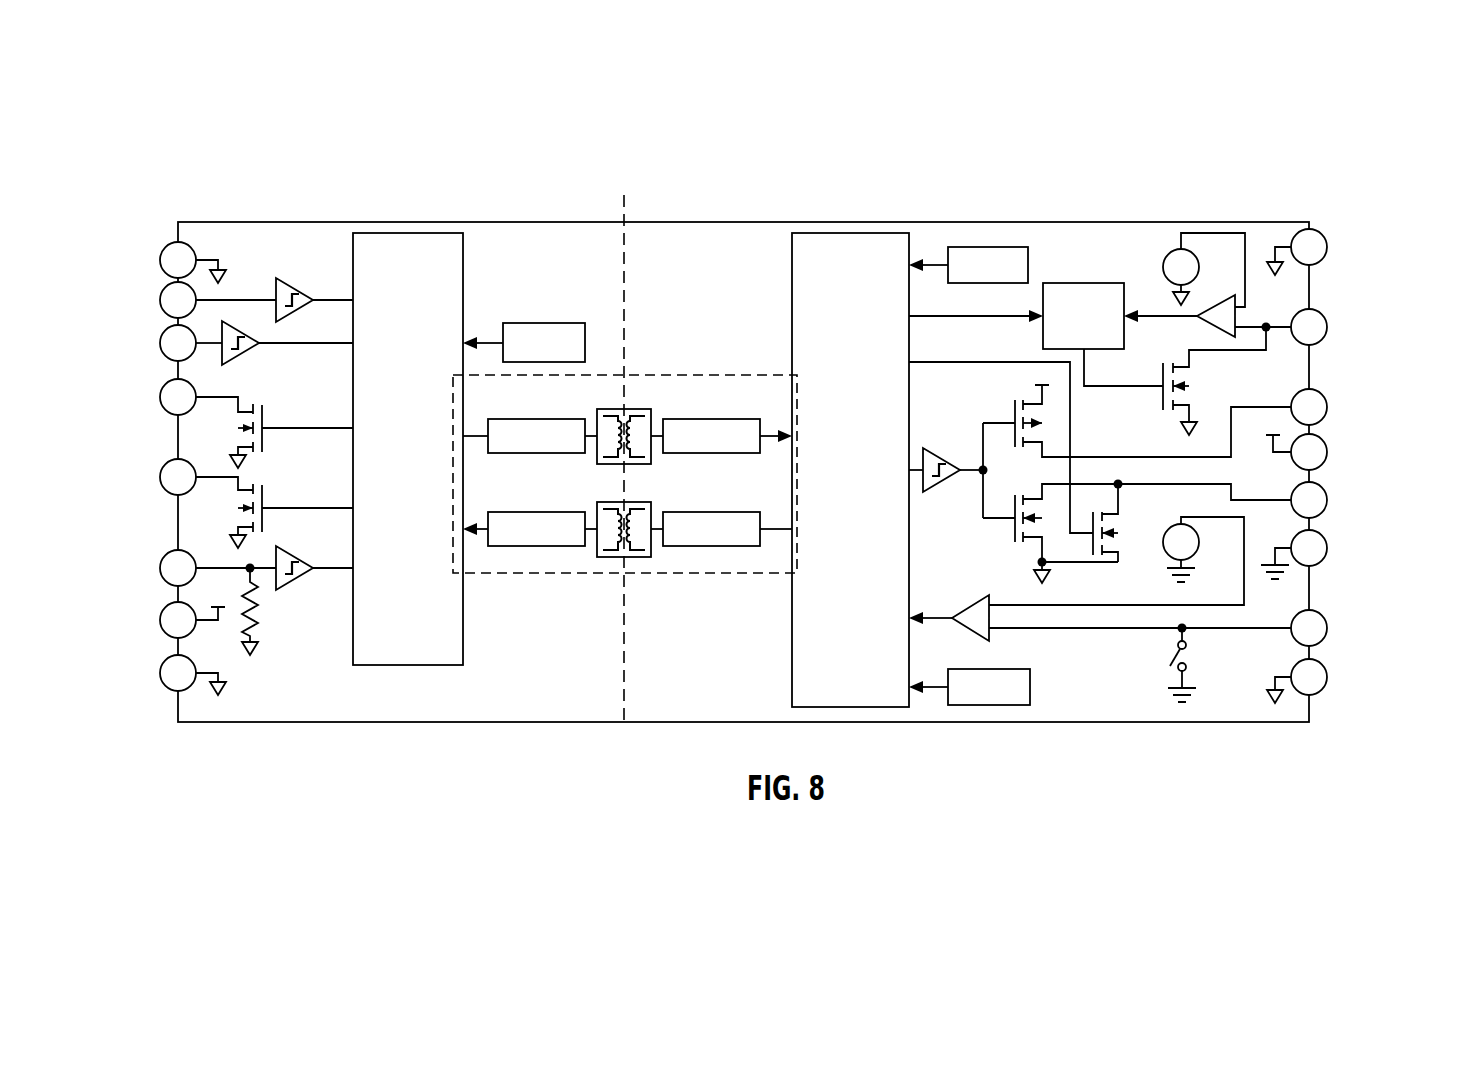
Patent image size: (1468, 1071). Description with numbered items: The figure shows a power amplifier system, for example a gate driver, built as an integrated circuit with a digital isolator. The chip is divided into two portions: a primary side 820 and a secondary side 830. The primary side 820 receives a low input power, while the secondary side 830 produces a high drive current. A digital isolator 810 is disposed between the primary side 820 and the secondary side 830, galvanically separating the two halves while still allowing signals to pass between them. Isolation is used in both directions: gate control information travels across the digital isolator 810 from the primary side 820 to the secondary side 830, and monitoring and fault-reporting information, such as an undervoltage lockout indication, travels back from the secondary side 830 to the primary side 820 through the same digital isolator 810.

The digital isolator 810 is at (704, 375).
The primary side 820 is at (342, 190).
The secondary side 830 is at (872, 176).